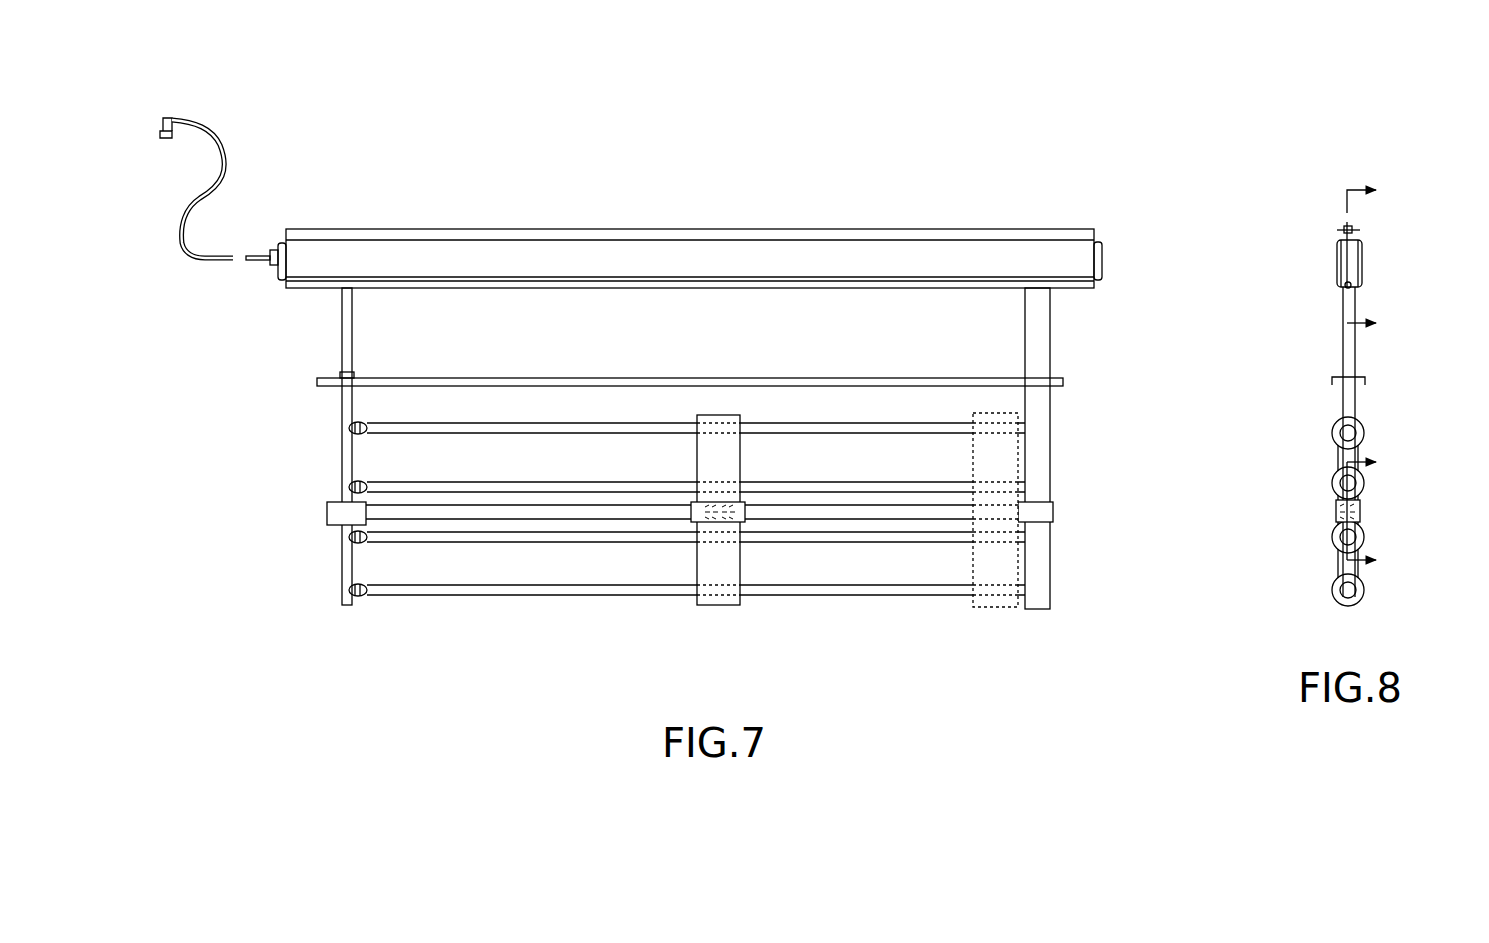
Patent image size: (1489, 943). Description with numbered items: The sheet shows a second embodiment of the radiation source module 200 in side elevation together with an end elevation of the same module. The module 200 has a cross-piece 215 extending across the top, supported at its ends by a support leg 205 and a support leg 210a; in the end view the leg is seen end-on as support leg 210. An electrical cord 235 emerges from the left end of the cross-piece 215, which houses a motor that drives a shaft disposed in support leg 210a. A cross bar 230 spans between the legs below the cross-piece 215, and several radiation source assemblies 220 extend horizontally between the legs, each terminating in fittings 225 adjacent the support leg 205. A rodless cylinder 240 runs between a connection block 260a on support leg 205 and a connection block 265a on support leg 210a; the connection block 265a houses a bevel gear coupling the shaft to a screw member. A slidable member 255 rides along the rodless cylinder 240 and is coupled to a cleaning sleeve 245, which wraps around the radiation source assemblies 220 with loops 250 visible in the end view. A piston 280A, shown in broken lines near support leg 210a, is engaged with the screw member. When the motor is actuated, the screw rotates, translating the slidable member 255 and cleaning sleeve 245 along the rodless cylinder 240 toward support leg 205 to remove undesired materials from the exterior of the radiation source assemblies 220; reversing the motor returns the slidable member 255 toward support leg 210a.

In FIG. 7, the radiation source module 200 is at (675, 396).
In FIG. 7, the support leg 205 is at (340, 340).
In FIG. 8, the support post 210 is at (1329, 341).
In FIG. 7, the support leg 210a is at (1043, 305).
In FIG. 7, the cross-piece 215 is at (855, 255).
In FIG. 8, the cross-piece 215 is at (1337, 258).
In FIG. 7, the radiation source assemblies 220 is at (790, 482).
In FIG. 7, the end nuts 225 is at (360, 433).
In FIG. 7, the cross bar 230 is at (534, 350).
In FIG. 8, the cross bar 230 is at (1343, 376).
In FIG. 7, the power cord 235 is at (212, 130).
In FIG. 7, the rodless cylinder 240 is at (600, 519).
In FIG. 7, the cleaning sleeve 245 is at (710, 563).
In FIG. 8, the cleaning sleeve 245 is at (1329, 507).
In FIG. 7, the loops 250 is at (713, 480).
In FIG. 8, the loops 250 is at (1340, 420).
In FIG. 7, the slidable member 255 is at (742, 520).
In FIG. 8, the slidable member 255 is at (1342, 503).
In FIG. 7, the left bracket 260a is at (327, 513).
In FIG. 7, the connection block 265a is at (1037, 510).
In FIG. 7, the piston 280A is at (990, 597).